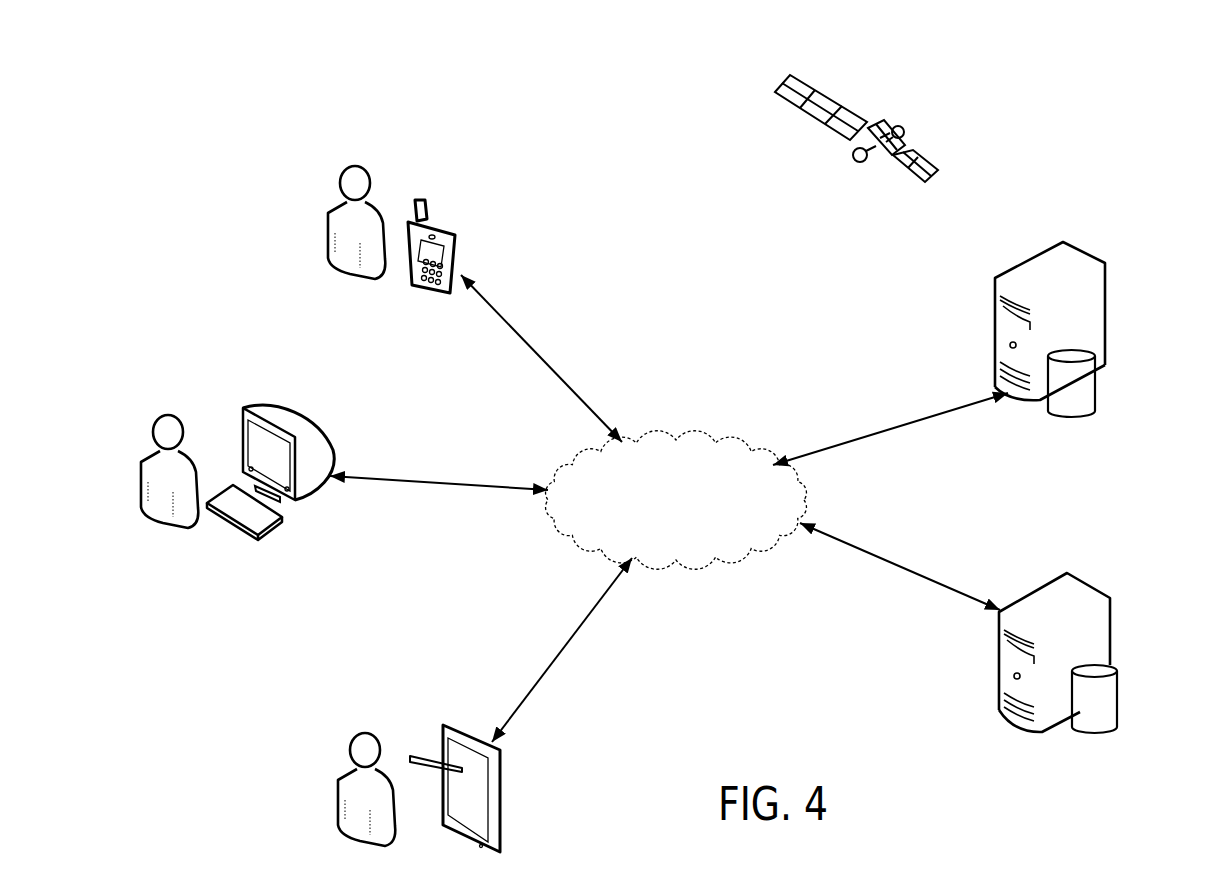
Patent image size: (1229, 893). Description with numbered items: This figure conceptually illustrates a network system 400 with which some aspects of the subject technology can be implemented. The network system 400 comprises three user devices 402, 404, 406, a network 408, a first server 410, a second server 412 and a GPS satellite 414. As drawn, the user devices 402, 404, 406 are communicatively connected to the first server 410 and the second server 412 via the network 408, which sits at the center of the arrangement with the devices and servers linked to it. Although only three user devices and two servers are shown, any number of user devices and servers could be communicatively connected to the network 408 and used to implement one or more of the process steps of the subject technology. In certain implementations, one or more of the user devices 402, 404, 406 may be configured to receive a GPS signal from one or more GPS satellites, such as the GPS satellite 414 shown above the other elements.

The network system 400 is at (694, 64).
The user device 402 is at (443, 222).
The user device 404 is at (303, 415).
The user device 406 is at (452, 722).
The network 408 is at (673, 440).
The first server 410 is at (1105, 263).
The second server 412 is at (1112, 598).
The GPS satellite 414 is at (905, 132).